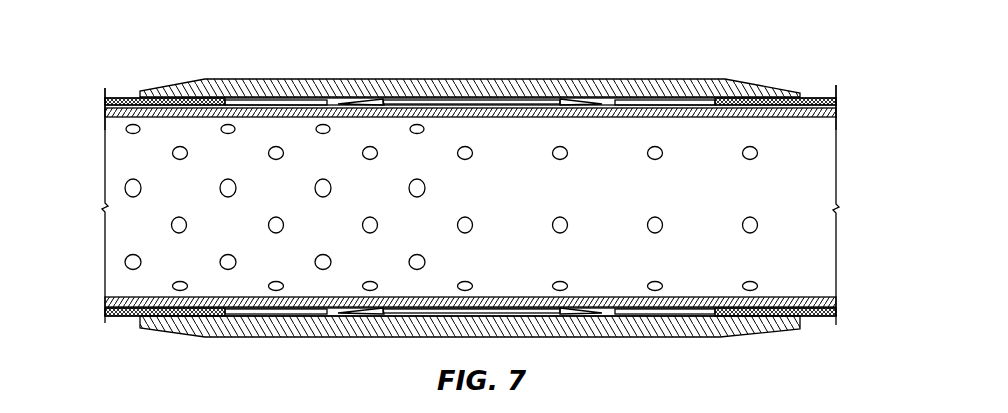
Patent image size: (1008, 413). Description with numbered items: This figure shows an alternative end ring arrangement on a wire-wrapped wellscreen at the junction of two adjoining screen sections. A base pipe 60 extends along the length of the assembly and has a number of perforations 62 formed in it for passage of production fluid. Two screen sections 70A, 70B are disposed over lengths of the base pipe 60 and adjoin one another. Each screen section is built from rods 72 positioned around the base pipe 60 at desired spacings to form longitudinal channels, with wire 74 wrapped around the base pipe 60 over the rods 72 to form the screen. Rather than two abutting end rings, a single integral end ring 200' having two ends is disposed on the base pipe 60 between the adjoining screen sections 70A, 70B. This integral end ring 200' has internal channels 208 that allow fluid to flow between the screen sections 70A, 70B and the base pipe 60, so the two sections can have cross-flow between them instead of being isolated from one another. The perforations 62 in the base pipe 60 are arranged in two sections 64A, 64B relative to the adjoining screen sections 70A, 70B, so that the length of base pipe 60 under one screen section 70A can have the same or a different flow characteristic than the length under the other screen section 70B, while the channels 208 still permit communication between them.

The base pipe 60 is at (107, 112).
The perforations 62 is at (178, 216).
The first section of perforations 64A is at (350, 235).
The second section of perforations 64B is at (728, 234).
The first screen section 70A is at (104, 68).
The second screen section 70B is at (818, 67).
The rods 72 is at (107, 102).
The wire 74 is at (128, 66).
The integral end ring 200' is at (470, 191).
The channels 208 is at (396, 105).